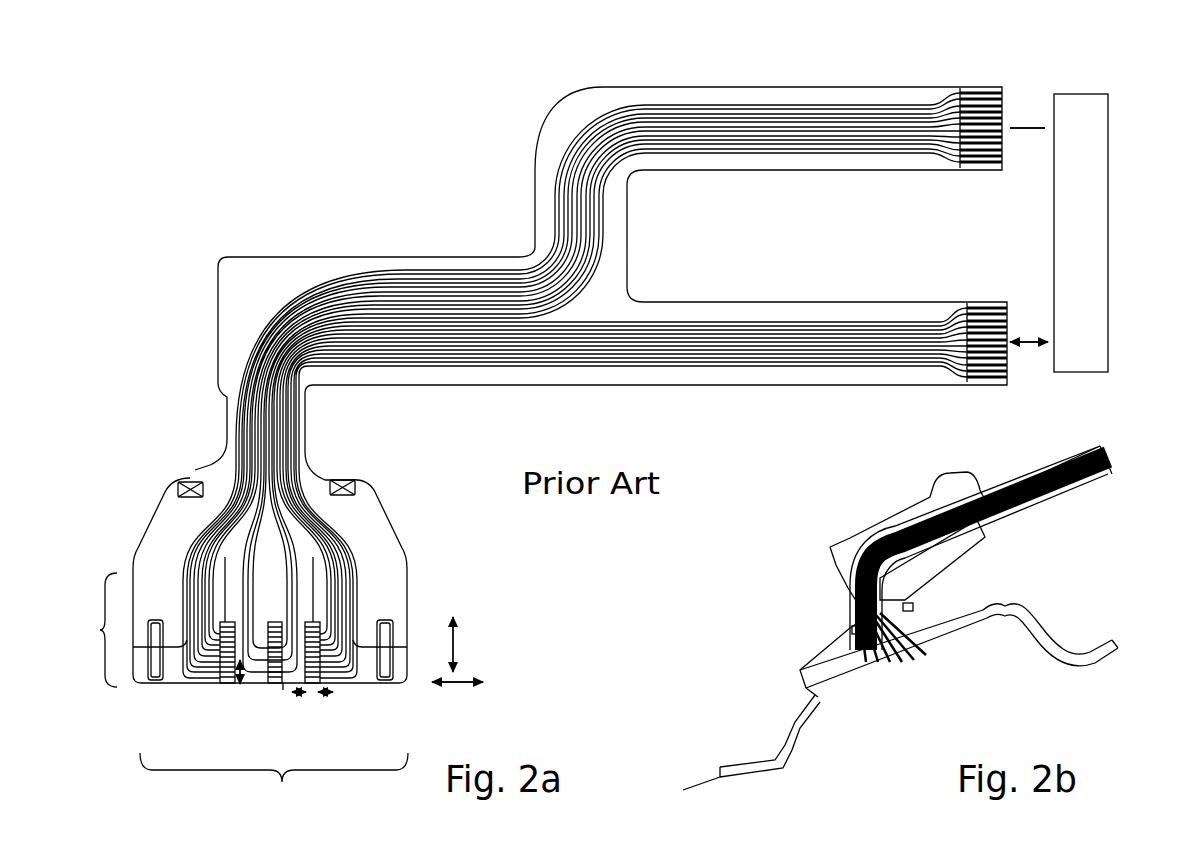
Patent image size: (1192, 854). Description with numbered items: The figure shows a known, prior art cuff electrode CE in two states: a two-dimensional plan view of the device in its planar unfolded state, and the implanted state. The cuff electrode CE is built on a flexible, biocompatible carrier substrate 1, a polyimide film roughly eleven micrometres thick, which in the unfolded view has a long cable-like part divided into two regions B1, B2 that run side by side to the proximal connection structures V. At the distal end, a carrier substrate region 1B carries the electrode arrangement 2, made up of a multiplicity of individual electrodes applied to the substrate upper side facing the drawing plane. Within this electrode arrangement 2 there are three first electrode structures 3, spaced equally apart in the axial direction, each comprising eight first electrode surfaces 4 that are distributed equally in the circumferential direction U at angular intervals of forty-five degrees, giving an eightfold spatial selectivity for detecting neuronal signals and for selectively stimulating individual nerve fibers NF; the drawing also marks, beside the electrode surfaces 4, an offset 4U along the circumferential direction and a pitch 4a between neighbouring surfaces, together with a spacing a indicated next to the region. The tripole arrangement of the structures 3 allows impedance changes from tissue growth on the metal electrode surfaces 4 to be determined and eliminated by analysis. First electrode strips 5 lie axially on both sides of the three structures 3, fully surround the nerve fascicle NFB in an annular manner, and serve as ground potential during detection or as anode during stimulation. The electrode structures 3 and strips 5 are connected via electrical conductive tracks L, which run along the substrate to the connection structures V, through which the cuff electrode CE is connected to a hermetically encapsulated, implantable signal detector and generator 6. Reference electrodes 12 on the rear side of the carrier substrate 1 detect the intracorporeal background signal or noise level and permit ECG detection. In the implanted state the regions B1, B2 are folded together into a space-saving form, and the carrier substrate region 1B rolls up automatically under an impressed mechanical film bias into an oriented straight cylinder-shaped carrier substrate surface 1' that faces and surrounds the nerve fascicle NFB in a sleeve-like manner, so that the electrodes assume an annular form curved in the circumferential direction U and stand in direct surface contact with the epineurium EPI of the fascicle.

In FIG. 2a, the carrier substrate 1 is at (601, 283).
In FIG. 2b, the carrier substrate 1 is at (950, 567).
In FIG. 2a, the carrier substrate surface 1' is at (303, 580).
In FIG. 2a, the carrier substrate region 1B is at (95, 630).
In FIG. 2a, the electrode arrangement 2 is at (274, 636).
In FIG. 2a, the first electrode structures 3 is at (228, 712).
In FIG. 2a, the first electrode surfaces 4 is at (287, 687).
In FIG. 2a, the track end offset 4U is at (244, 676).
In FIG. 2a, the track pitch 4a is at (318, 693).
In FIG. 2a, the first electrode strips 5 is at (155, 693).
In FIG. 2a, the signal detector and generator 6 is at (1088, 236).
In FIG. 2a, the reference electrodes 12 is at (190, 470).
In FIG. 2a, the electrical conductive tracks L is at (458, 300).
In FIG. 2a, the region of the cuff electrode B1 is at (803, 160).
In FIG. 2a, the region of the cuff electrode B2 is at (807, 310).
In FIG. 2a, the connection structures V is at (970, 86).
In FIG. 2a, the circumferential direction U is at (464, 644).
In FIG. 2a, the pitch a is at (457, 693).
In FIG. 2a, the cuff electrode CE is at (192, 248).
In FIG. 2b, the cuff electrode CE is at (802, 583).
In FIG. 2b, the nerve fascicle NFB is at (1037, 623).
In FIG. 2b, the nerve fibers NF is at (700, 773).
In FIG. 2b, the epineurium EPI is at (777, 763).